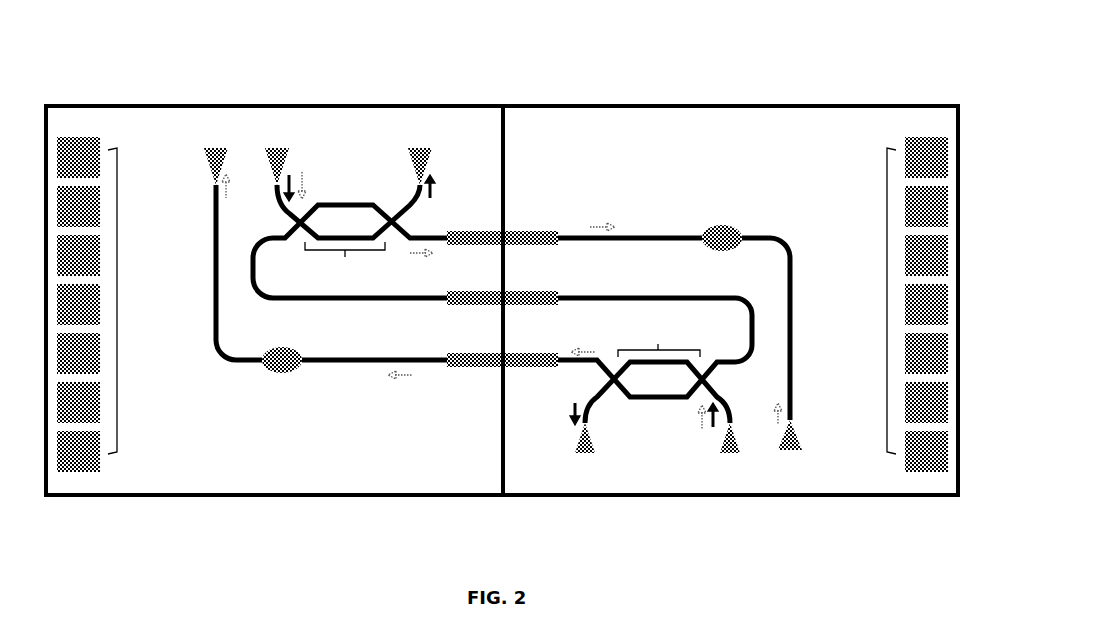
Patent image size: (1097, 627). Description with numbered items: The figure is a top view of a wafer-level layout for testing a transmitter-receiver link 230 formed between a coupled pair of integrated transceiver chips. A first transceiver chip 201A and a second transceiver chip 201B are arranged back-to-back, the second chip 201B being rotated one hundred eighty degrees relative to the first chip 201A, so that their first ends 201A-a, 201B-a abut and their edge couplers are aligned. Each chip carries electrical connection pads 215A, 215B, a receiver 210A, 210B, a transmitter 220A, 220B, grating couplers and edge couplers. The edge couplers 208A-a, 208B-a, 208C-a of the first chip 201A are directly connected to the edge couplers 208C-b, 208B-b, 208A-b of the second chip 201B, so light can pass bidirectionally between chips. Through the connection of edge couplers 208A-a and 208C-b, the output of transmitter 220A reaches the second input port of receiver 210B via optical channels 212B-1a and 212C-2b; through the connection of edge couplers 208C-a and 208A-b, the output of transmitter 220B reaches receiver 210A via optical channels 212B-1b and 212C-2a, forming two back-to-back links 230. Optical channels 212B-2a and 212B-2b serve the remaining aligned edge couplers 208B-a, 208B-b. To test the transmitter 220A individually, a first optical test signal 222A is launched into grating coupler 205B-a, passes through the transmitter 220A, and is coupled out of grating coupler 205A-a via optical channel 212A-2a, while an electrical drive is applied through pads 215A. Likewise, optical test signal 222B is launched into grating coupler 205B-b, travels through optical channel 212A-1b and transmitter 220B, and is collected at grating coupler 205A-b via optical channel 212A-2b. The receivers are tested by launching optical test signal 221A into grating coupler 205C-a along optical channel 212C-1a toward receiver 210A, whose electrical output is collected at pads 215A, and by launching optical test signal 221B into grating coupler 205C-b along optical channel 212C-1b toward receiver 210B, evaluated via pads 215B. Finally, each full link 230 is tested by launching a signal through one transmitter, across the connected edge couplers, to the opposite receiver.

The transmitter-receiver link 230 is at (836, 80).
The first transceiver chip 201A is at (480, 481).
The second transceiver chip 201B is at (563, 140).
The first end of first transceiver chip 201A-a is at (487, 508).
The first end of second transceiver chip 201B-a is at (520, 508).
The grating coupler 205A-a is at (412, 153).
The grating coupler 205B-a is at (272, 153).
The grating coupler 205C-a is at (208, 163).
The grating coupler 205A-b is at (600, 453).
The grating coupler 205B-b is at (741, 452).
The grating coupler 205C-b is at (796, 440).
The edge coupler 208A-a is at (452, 230).
The edge coupler 208B-a is at (463, 306).
The edge coupler 208C-a is at (477, 368).
The edge coupler 208A-b is at (530, 342).
The edge coupler 208B-b is at (550, 279).
The edge coupler 208C-b is at (522, 232).
The receiver 210A is at (273, 373).
The receiver 210B is at (737, 229).
The optical channel 212A-2a is at (400, 208).
The optical channel 212B-1a is at (400, 240).
The optical channel 212B-2a is at (370, 301).
The optical channel 212C-1a is at (217, 351).
The optical channel 212C-2a is at (340, 366).
The optical channel 212A-1b is at (705, 378).
The optical channel 212A-2b is at (603, 393).
The optical channel 212B-1b is at (597, 376).
The optical channel 212B-2b is at (638, 279).
The optical channel 212C-1b is at (792, 296).
The optical channel 212C-2b is at (678, 216).
The electrical connection pads 215A is at (117, 301).
The electrical connection pads 215B is at (887, 301).
The transmitter 220A is at (345, 251).
The transmitter 220B is at (659, 354).
The optical test signal 221A is at (212, 197).
The optical test signal 221B is at (783, 404).
The first optical test signal 222A is at (284, 196).
The optical test signal 222B is at (571, 421).